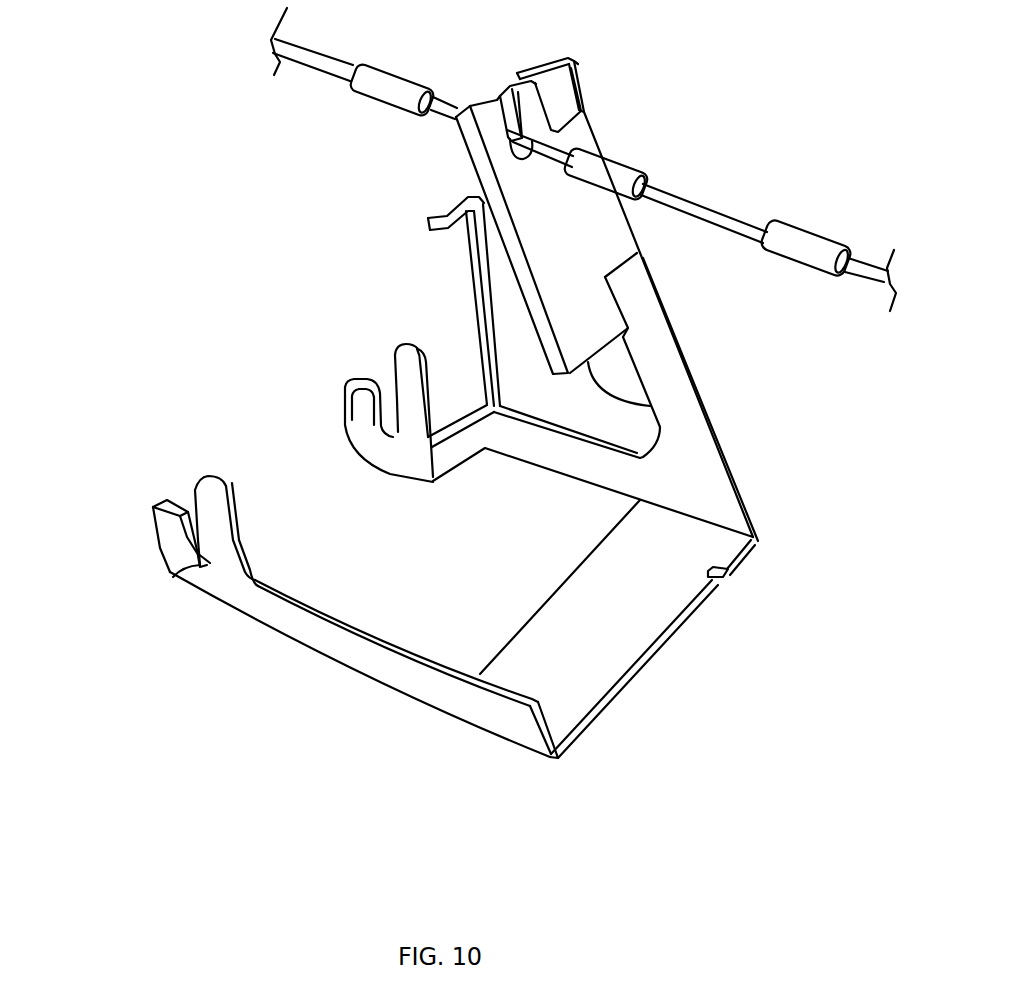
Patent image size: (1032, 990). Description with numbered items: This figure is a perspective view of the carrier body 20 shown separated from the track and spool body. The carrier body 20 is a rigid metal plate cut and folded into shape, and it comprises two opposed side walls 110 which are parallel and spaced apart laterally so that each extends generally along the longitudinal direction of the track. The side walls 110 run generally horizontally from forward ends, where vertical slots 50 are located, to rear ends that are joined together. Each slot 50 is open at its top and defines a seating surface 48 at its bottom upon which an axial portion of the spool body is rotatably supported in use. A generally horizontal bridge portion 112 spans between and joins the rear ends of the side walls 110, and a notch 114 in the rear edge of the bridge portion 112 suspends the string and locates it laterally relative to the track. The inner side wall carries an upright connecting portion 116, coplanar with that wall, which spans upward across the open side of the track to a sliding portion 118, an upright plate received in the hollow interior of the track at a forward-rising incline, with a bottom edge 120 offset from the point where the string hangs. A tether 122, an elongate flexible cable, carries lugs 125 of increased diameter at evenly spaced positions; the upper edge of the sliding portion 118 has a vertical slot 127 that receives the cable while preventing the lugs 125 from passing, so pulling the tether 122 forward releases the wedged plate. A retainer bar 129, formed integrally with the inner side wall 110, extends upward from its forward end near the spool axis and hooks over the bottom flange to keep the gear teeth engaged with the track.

The carrier body 20 is at (75, 211).
The seating surfaces 48 is at (385, 437).
The vertical slots 50 is at (378, 405).
The side walls 110 is at (353, 647).
The bridge portion 112 is at (642, 638).
The notch 114 is at (703, 570).
The upright connecting portion 116 is at (657, 353).
The sliding portion 118 is at (553, 242).
The bottom edge of the sliding portion 120 is at (650, 406).
The tether 122 is at (690, 202).
The lugs 125 is at (393, 82).
The vertical slot 127 is at (497, 117).
The retainer bar 129 is at (480, 306).